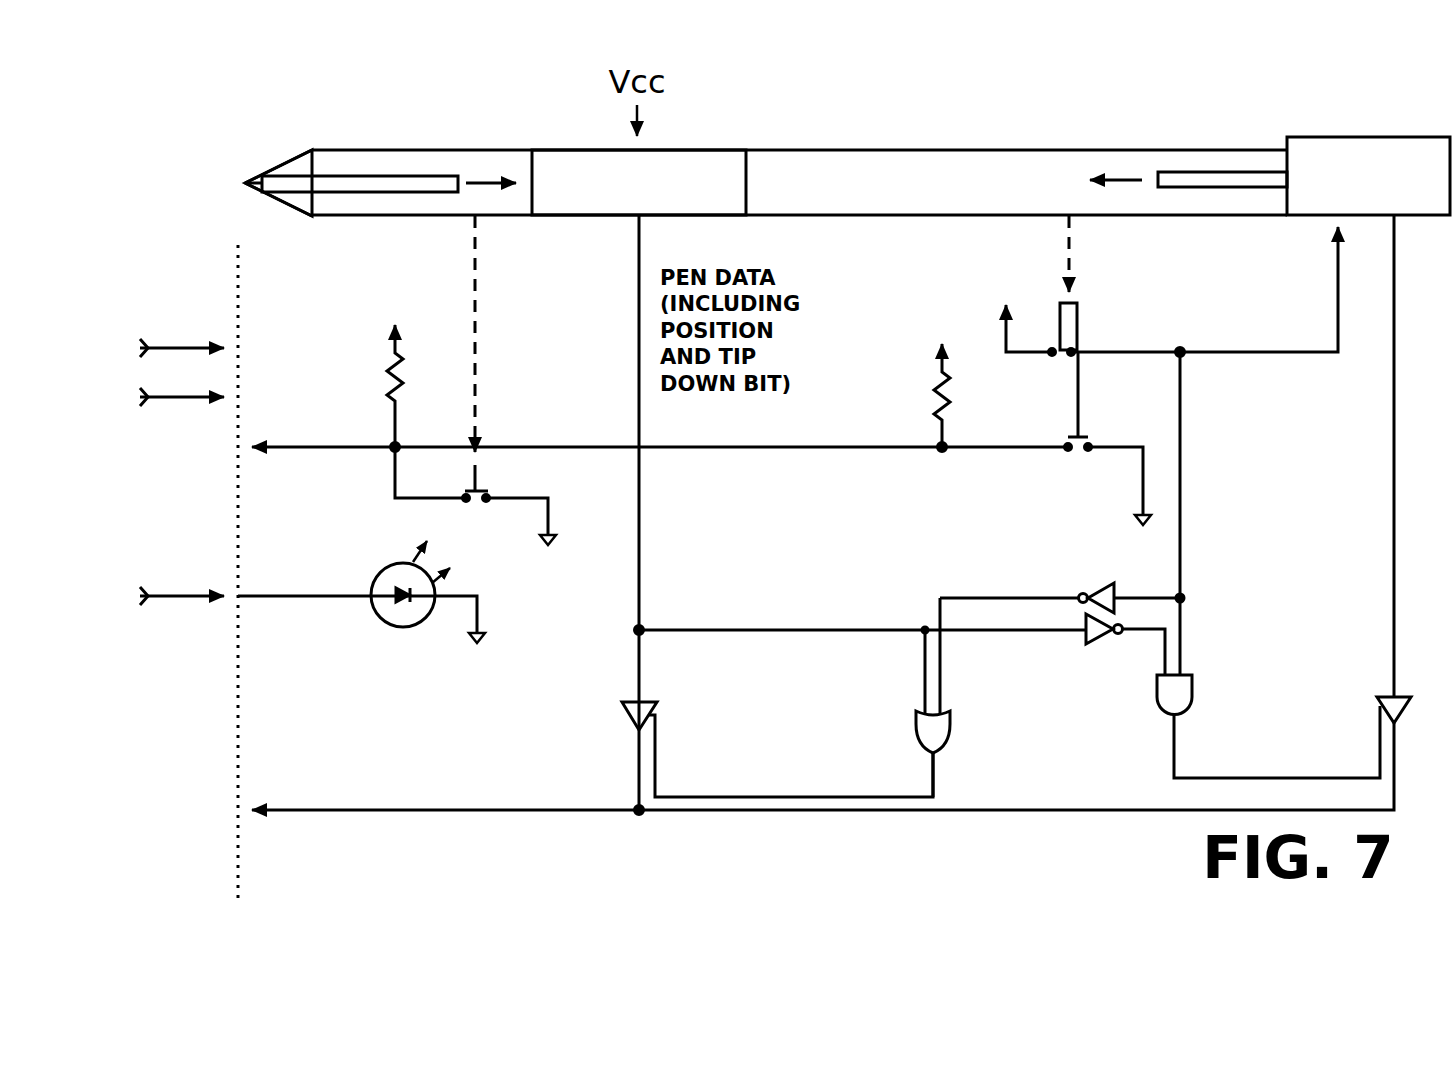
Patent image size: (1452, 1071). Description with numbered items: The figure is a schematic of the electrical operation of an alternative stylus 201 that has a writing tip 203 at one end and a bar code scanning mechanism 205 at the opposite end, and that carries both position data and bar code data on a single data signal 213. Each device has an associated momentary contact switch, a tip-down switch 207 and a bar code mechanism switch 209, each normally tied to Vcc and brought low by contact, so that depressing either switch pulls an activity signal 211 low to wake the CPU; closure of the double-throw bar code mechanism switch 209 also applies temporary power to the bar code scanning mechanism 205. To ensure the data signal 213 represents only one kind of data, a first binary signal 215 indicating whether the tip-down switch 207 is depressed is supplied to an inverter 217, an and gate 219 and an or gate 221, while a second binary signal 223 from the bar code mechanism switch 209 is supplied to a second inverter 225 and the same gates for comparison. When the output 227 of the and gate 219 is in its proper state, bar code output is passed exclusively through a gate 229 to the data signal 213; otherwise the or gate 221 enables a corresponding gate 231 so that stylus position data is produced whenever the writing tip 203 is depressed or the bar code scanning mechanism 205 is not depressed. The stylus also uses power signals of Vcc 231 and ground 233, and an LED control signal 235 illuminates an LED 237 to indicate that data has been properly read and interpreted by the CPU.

The stylus 201 is at (917, 136).
The writing tip 203 is at (440, 139).
The bar code scanning mechanism 205 is at (1292, 129).
The tip-down switch 207 is at (498, 468).
The bar code mechanism switch 209 is at (1098, 390).
The activity signal 211 is at (883, 445).
The data signal 213 is at (375, 808).
The first binary signal 215 is at (755, 629).
The inverter 217 is at (1088, 645).
The and gate 219 is at (1190, 675).
The or gate 221 is at (917, 715).
The second binary signal 223 is at (1183, 427).
The second inverter 225 is at (1110, 583).
The output 227 is at (1217, 777).
The gate 229 is at (1385, 697).
The gate for stylus position data / Vcc 231 is at (193, 345).
The ground 233 is at (192, 402).
The LED control signal 235 is at (197, 594).
The LED 237 is at (379, 574).